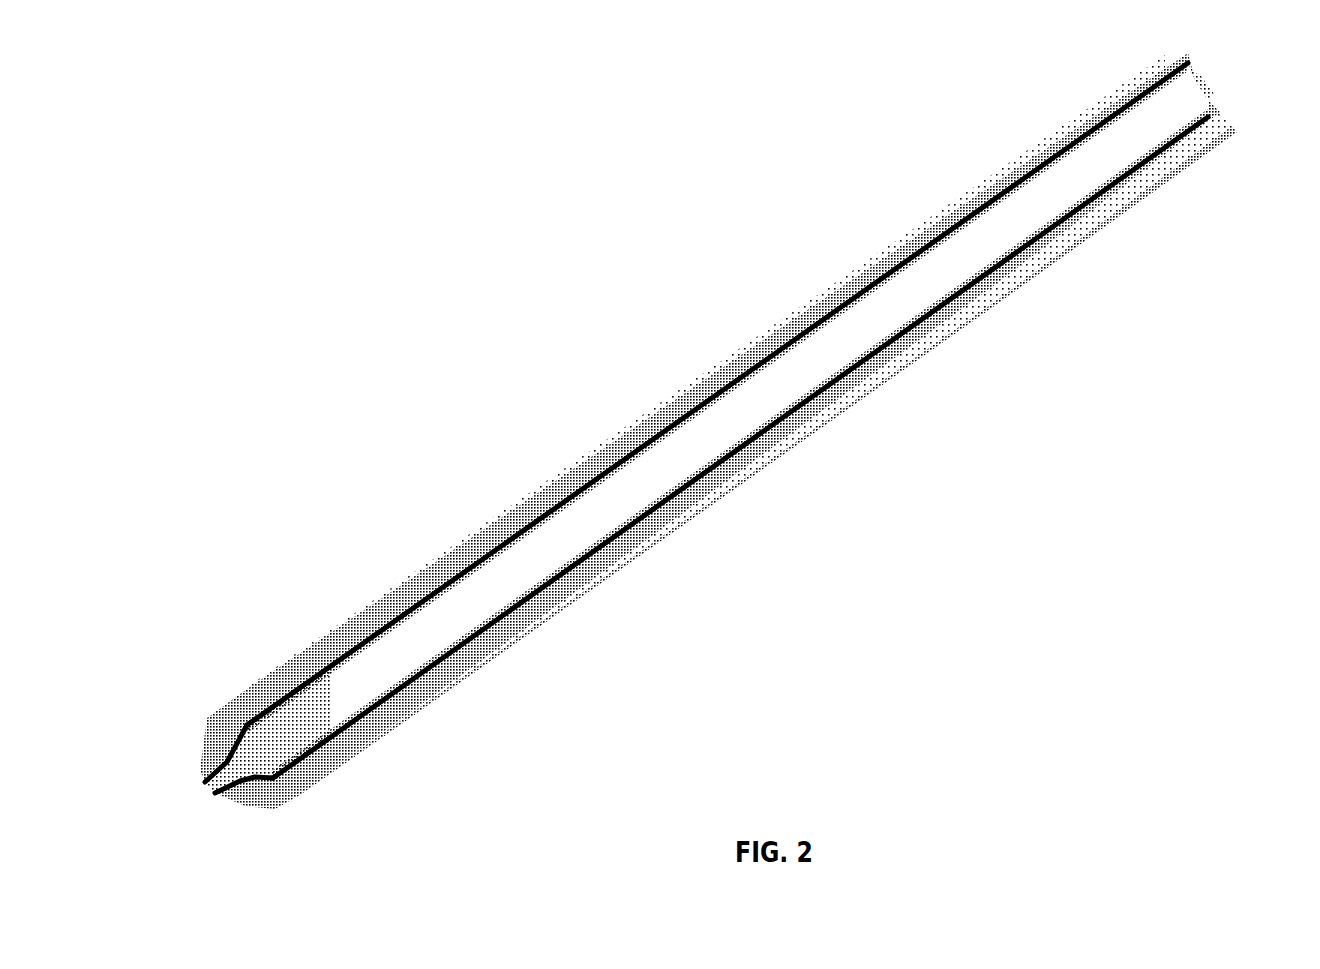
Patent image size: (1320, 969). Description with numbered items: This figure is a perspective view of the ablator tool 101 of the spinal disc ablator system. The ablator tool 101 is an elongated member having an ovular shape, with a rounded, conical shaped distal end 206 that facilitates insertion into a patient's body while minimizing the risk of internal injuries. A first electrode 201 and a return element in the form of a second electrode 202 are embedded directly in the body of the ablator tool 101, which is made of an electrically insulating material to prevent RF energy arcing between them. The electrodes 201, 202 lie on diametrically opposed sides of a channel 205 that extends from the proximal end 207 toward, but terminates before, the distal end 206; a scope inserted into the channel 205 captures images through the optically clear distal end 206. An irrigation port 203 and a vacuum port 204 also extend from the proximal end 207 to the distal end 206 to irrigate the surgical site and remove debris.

The ablator tool 101 is at (701, 454).
The first electrode 201 is at (392, 624).
The second electrode 202 is at (397, 690).
The irrigation port 203 is at (943, 318).
The vacuum port 204 is at (980, 198).
The channel 205 is at (1032, 205).
The distal end 206 is at (208, 787).
The proximal end 207 is at (1198, 92).